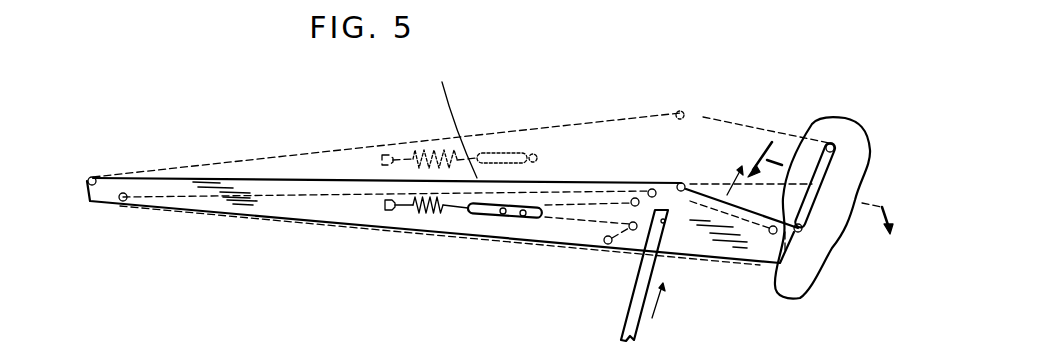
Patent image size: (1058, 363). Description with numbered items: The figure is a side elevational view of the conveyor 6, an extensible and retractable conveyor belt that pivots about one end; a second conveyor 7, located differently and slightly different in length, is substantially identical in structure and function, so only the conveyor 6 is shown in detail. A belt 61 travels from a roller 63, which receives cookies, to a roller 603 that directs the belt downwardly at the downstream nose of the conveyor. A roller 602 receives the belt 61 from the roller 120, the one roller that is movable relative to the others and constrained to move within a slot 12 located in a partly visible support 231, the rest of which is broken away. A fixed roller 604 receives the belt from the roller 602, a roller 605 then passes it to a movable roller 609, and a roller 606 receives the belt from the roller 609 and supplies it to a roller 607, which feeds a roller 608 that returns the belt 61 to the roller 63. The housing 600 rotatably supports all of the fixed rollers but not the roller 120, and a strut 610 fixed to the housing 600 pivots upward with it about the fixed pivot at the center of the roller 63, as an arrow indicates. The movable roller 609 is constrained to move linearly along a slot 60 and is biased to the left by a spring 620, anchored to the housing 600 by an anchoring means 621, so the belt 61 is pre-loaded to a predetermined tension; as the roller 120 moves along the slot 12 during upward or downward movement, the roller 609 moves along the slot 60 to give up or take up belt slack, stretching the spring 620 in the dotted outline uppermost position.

The conveyor 6 is at (171, 142).
The roller 63 is at (93, 178).
The belt 61 is at (254, 178).
The roller 608 is at (123, 201).
The housing 600 is at (583, 125).
The anchoring means 621 is at (391, 211).
The spring 620 is at (428, 147).
The movable roller 609 is at (535, 152).
The slot 60 is at (450, 119).
The roller 603 is at (681, 111).
The roller 604 is at (651, 189).
The roller 605 is at (634, 198).
The roller 606 is at (633, 230).
The roller 607 is at (605, 243).
The strut 610 is at (627, 310).
The roller 602 is at (773, 234).
The roller 120 is at (828, 143).
The slot 12 is at (803, 150).
The support 231 is at (815, 215).
The conveyor 7 is at (824, 179).